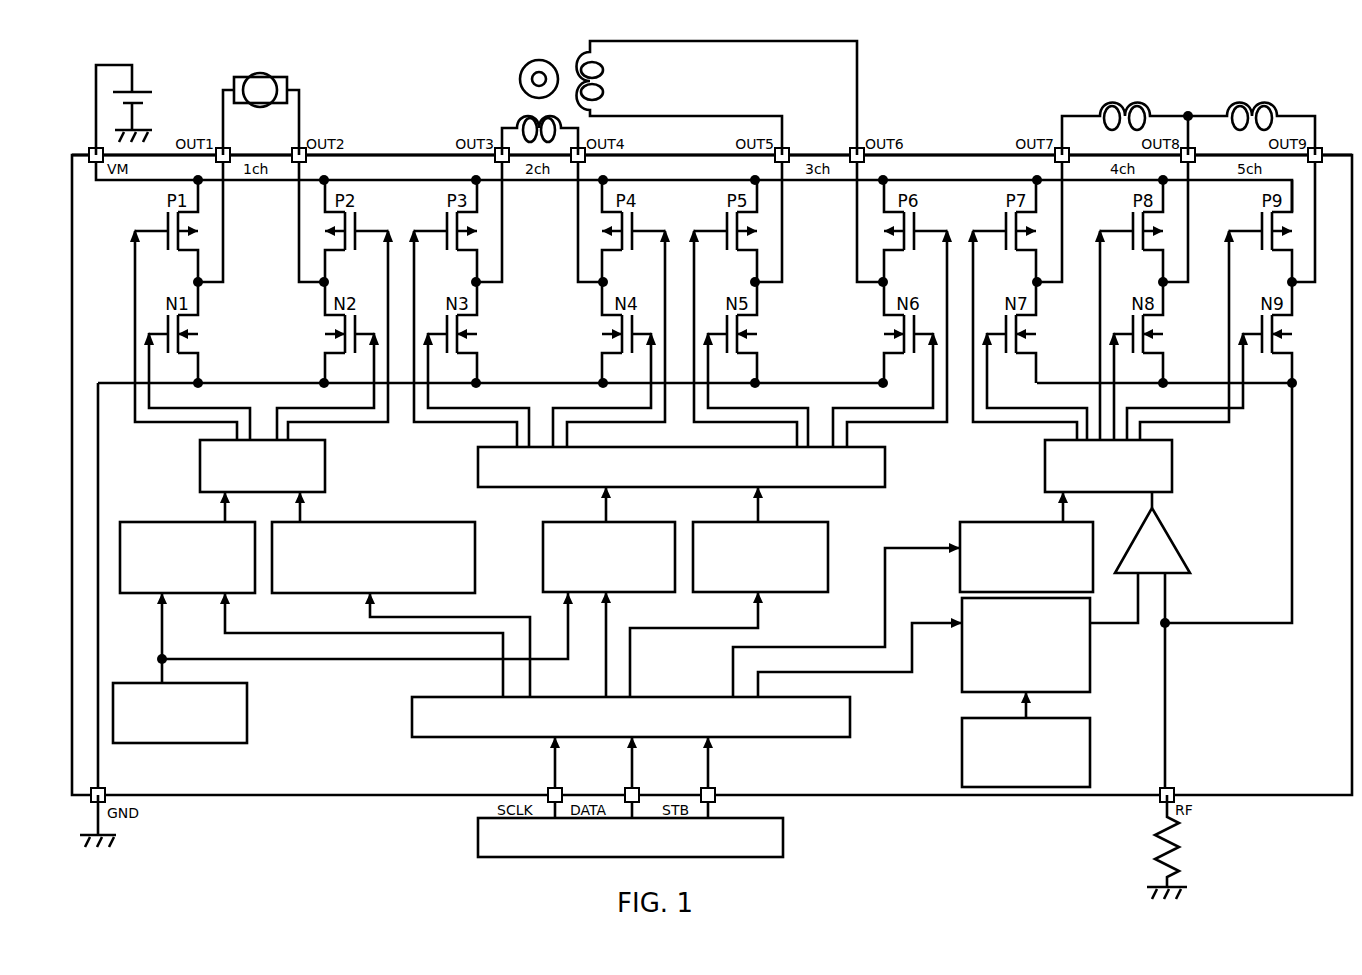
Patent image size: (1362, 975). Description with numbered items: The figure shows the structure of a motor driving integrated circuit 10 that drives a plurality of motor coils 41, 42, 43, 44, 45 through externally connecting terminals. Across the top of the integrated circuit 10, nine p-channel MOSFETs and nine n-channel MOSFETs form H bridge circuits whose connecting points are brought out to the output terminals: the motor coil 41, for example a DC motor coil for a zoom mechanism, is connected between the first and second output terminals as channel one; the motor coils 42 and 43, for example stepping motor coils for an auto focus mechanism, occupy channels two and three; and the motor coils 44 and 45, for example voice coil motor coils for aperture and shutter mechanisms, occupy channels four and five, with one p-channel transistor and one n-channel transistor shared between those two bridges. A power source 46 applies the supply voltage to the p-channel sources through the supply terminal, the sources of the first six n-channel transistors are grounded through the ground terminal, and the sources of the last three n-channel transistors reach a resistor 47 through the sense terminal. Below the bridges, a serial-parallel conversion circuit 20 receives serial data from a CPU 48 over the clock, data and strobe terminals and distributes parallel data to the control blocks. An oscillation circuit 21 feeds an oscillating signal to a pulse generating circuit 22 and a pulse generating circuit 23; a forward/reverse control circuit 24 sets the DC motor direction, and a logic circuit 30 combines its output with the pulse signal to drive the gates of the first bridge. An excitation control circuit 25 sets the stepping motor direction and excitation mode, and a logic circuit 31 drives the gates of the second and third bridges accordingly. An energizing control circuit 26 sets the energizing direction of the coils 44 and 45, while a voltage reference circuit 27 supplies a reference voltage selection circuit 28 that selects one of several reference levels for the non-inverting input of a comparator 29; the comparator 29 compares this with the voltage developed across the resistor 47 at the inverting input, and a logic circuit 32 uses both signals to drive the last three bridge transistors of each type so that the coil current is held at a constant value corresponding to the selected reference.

The motor driving integrated circuit 10 is at (314, 797).
The serial-parallel conversion circuit 20 is at (412, 722).
The oscillation circuit 21 is at (247, 715).
The pulse generating circuit 22 is at (137, 522).
The pulse generating circuit 23 is at (543, 550).
The forward/reverse control circuit 24 is at (428, 522).
The excitation control circuit 25 is at (805, 592).
The energizing control circuit 26 is at (960, 562).
The voltage reference circuit 27 is at (962, 748).
The reference voltage selection circuit 28 is at (962, 635).
The comparator 29 is at (1172, 540).
The logic circuit 30 is at (325, 465).
The logic circuit 31 is at (885, 470).
The logic circuit 32 is at (1172, 470).
The motor coil 41 is at (287, 88).
The motor coil 42 is at (520, 118).
The motor coil 43 is at (603, 86).
The motor coil 44 is at (1100, 110).
The motor coil 45 is at (1228, 110).
The power source 46 is at (147, 100).
The resistor 47 is at (1178, 838).
The CPU 48 is at (783, 830).